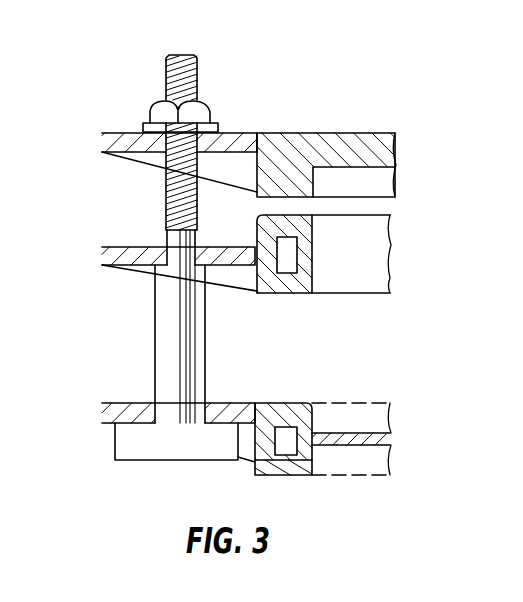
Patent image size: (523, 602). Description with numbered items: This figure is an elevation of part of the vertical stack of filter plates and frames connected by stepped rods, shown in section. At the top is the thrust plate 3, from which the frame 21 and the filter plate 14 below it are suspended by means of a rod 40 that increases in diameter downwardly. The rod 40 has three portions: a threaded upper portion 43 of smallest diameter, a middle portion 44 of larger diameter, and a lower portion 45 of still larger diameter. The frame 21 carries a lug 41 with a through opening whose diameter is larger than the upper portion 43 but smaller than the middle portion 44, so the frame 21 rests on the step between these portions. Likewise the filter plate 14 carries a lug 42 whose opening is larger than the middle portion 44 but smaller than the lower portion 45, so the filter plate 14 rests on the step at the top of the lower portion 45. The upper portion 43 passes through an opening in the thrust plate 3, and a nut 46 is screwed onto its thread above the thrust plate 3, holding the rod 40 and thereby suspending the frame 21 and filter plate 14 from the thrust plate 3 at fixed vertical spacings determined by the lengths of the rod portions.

The thrust plate 3 is at (330, 140).
The filter plate 14 is at (295, 403).
The frame 21 is at (305, 294).
The rod 40 is at (154, 344).
The lug 41 is at (102, 258).
The lug 42 is at (122, 406).
The upper portion 43 is at (167, 200).
The middle portion 44 is at (196, 352).
The lower portion 45 is at (133, 445).
The nut 46 is at (160, 113).